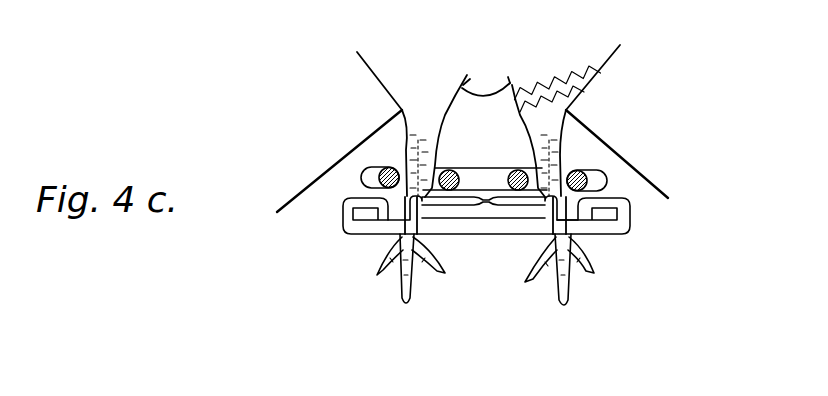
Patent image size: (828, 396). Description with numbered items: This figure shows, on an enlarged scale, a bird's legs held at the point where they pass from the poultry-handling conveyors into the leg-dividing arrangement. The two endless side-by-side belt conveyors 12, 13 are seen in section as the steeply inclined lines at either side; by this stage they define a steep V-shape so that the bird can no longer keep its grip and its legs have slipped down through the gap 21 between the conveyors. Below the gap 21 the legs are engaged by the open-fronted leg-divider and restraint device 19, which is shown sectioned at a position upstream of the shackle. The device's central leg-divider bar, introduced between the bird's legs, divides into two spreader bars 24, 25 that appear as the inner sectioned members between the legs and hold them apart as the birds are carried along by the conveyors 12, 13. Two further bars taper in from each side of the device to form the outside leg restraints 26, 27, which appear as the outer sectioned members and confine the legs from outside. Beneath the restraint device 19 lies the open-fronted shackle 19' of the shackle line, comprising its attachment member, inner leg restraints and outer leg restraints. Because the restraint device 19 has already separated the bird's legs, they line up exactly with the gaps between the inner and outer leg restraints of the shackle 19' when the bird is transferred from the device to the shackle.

The belt conveyor 12 is at (301, 190).
The belt conveyor 13 is at (662, 184).
The leg-divider and restraint device 19 is at (624, 148).
The open-fronted shackle 19' is at (445, 225).
The gap 21 is at (496, 132).
The spreader bar 24 is at (452, 185).
The spreader bar 25 is at (517, 170).
The outside leg restraint 26 is at (390, 166).
The outside leg restraint 27 is at (581, 169).